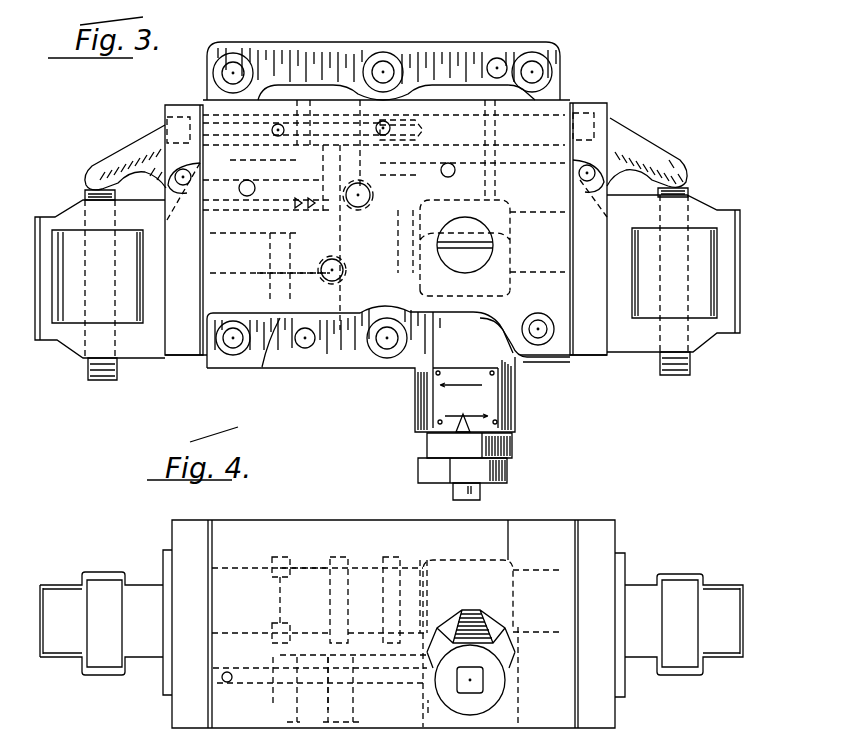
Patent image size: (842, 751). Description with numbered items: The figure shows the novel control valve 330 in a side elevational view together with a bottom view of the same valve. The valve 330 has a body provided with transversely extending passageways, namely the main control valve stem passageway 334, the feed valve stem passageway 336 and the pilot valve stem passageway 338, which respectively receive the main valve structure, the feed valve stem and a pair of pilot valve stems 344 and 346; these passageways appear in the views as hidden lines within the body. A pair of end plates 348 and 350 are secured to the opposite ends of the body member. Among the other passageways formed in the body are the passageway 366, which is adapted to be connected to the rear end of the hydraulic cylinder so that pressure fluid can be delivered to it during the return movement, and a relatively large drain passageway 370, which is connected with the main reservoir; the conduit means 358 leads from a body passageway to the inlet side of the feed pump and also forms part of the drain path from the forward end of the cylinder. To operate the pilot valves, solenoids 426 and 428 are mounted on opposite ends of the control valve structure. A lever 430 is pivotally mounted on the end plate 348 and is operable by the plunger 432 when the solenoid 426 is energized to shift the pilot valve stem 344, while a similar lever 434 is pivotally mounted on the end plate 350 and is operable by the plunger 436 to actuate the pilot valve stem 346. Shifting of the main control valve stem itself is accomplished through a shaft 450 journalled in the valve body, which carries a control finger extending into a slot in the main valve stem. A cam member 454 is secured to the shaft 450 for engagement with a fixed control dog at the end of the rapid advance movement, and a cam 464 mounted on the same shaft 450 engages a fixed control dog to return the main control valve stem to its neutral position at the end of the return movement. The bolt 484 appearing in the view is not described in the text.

In FIG. 3, the control valve 330 is at (592, 84).
In FIG. 4, the control valve 330 is at (648, 496).
In FIG. 3, the main control valve stem passageway 334 is at (257, 273).
In FIG. 4, the main control valve stem passageway 334 is at (308, 567).
In FIG. 3, the feed valve stem passageway 336 is at (456, 80).
In FIG. 3, the pilot valve stem passageway 338 is at (400, 112).
In FIG. 3, the pilot valve stem 344 is at (187, 117).
In FIG. 3, the pilot valve stem 346 is at (658, 79).
In FIG. 3, the end plate 348 is at (183, 352).
In FIG. 3, the end plate 350 is at (593, 343).
In FIG. 4, the conduit means 358 is at (328, 710).
In FIG. 4, the passageway 366 is at (273, 703).
In FIG. 4, the drain passageway 370 is at (428, 713).
In FIG. 3, the solenoid 426 is at (50, 217).
In FIG. 4, the solenoid 426 is at (60, 588).
In FIG. 3, the solenoid 428 is at (708, 203).
In FIG. 4, the solenoid 428 is at (717, 590).
In FIG. 3, the lever 430 is at (140, 143).
In FIG. 3, the plunger 432 is at (80, 186).
In FIG. 3, the lever 434 is at (630, 145).
In FIG. 3, the plunger 436 is at (687, 186).
In FIG. 3, the shaft 450 is at (474, 497).
In FIG. 4, the shaft 450 is at (483, 680).
In FIG. 3, the cam member 454 is at (500, 470).
In FIG. 4, the cam member 454 is at (481, 702).
In FIG. 3, the cam 464 is at (497, 447).
In FIG. 4, the cam 464 is at (510, 633).
In FIG. 3, the mounting bolt 484 is at (380, 71).